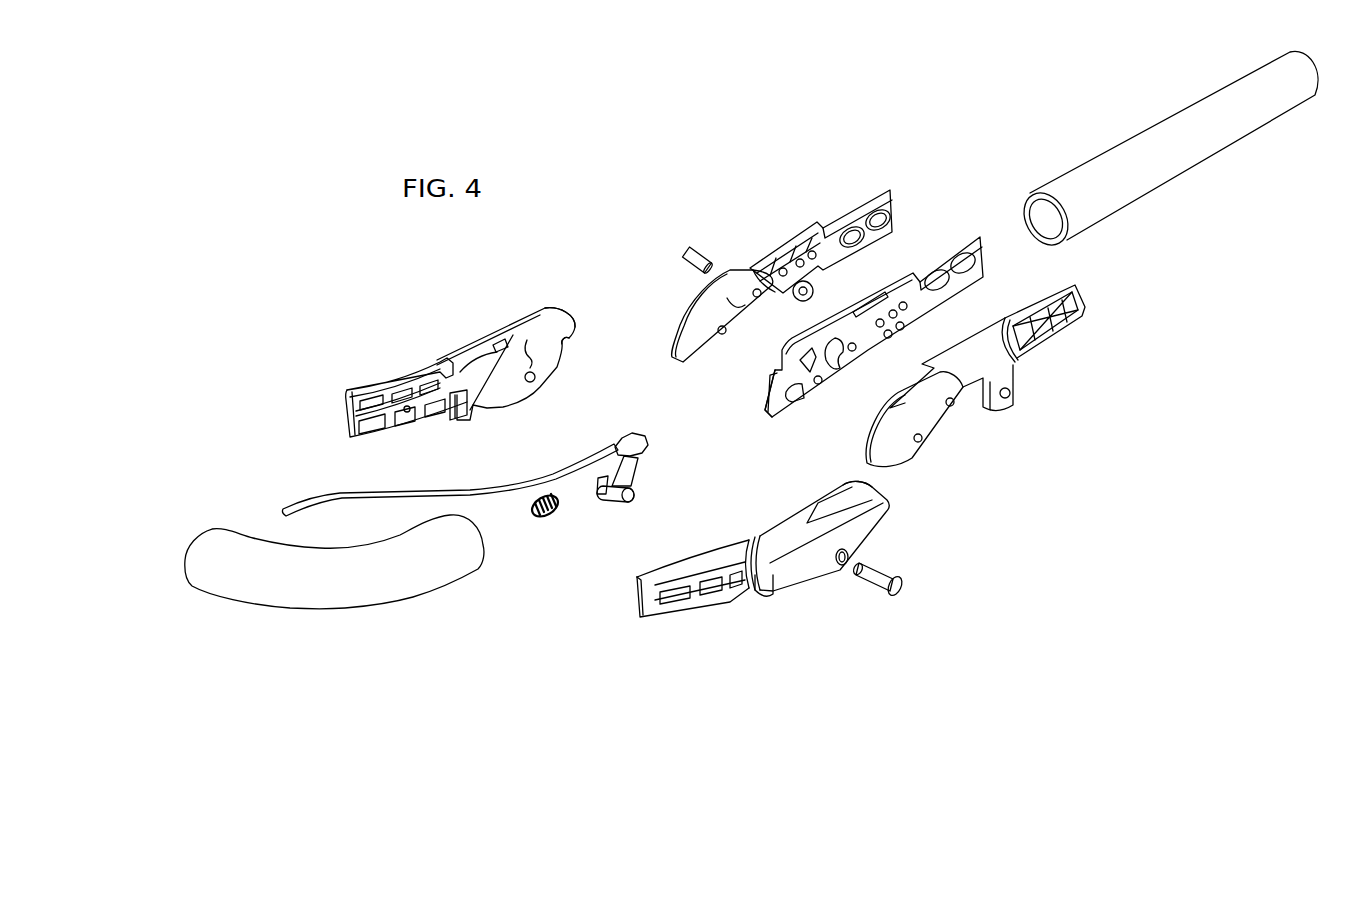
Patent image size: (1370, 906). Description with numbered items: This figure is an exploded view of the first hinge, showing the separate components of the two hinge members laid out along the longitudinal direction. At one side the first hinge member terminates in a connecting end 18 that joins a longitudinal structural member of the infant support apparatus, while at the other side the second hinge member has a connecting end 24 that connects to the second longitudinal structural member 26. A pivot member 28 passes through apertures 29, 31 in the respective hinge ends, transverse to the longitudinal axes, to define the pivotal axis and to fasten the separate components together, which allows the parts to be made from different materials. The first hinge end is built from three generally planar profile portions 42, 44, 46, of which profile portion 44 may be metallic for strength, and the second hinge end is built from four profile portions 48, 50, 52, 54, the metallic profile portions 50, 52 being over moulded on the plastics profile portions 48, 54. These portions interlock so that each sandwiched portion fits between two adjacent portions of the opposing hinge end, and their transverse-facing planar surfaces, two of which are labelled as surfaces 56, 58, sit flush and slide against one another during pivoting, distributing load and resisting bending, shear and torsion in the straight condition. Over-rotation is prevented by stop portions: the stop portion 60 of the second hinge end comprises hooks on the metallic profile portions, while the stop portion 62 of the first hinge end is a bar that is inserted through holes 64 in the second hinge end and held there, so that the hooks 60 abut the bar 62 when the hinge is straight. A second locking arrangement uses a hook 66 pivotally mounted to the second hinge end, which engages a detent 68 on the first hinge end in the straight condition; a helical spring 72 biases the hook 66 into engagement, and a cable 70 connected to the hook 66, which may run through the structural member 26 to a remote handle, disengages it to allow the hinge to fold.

The connecting end 18 is at (1040, 352).
The connecting end 24 is at (378, 388).
The second longitudinal structural member 26 is at (322, 598).
The pivot member 28 is at (902, 580).
The aperture 29 is at (723, 335).
The aperture 31 is at (533, 383).
The profile portion 42 is at (677, 340).
The profile portion 44 is at (775, 405).
The profile portion 46 is at (890, 465).
The profile portion 48 is at (518, 318).
The profile portion 50 is at (567, 312).
The profile portion 52 is at (820, 496).
The profile portion 54 is at (867, 502).
The planar surface 56 is at (743, 303).
The planar surface 58 is at (1117, 193).
The stop portion 60 is at (568, 348).
The stop portion 62 is at (687, 253).
The holes 64 is at (760, 296).
The hook 66 is at (640, 452).
The detent 68 is at (780, 416).
The cable 70 is at (335, 492).
The helical spring 72 is at (545, 520).